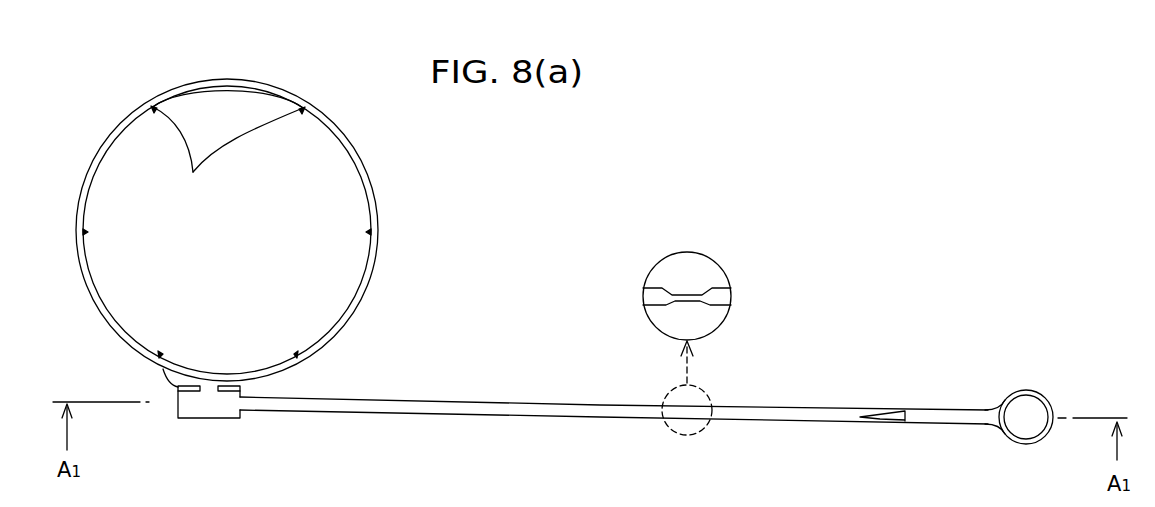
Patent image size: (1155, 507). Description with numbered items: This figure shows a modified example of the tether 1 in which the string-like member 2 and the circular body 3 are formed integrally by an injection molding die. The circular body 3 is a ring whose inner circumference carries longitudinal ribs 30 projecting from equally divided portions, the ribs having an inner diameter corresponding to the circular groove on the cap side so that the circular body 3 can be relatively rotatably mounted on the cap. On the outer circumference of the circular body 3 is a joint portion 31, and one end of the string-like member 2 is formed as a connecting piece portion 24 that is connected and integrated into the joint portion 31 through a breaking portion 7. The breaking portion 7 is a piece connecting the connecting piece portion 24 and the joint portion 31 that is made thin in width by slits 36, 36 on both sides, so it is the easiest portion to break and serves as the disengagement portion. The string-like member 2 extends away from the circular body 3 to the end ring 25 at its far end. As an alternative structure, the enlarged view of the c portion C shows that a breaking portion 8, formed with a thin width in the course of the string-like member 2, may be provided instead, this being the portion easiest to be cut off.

The tether 1 is at (532, 251).
The string-like member 2 is at (487, 263).
The circular body 3 is at (378, 253).
The breaking portion 7 is at (207, 388).
The breaking portion 8 is at (687, 292).
The connecting piece portion 24 is at (207, 418).
The end ring 25 is at (1027, 400).
The longitudinal ribs 30 is at (193, 172).
The joint portion 31 is at (167, 382).
The slits 36 is at (240, 390).
The c portion C is at (718, 268).